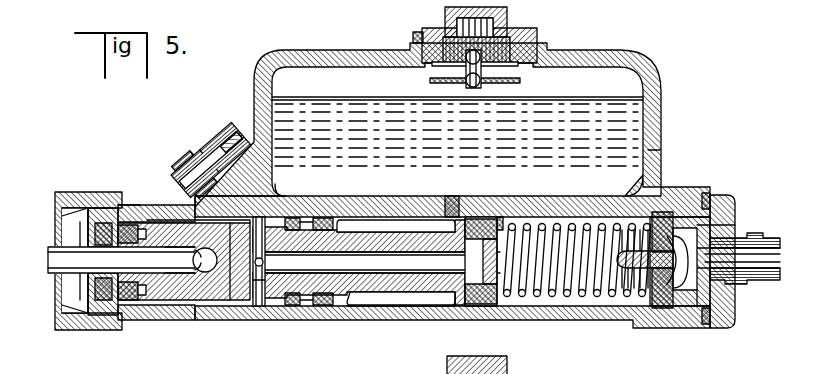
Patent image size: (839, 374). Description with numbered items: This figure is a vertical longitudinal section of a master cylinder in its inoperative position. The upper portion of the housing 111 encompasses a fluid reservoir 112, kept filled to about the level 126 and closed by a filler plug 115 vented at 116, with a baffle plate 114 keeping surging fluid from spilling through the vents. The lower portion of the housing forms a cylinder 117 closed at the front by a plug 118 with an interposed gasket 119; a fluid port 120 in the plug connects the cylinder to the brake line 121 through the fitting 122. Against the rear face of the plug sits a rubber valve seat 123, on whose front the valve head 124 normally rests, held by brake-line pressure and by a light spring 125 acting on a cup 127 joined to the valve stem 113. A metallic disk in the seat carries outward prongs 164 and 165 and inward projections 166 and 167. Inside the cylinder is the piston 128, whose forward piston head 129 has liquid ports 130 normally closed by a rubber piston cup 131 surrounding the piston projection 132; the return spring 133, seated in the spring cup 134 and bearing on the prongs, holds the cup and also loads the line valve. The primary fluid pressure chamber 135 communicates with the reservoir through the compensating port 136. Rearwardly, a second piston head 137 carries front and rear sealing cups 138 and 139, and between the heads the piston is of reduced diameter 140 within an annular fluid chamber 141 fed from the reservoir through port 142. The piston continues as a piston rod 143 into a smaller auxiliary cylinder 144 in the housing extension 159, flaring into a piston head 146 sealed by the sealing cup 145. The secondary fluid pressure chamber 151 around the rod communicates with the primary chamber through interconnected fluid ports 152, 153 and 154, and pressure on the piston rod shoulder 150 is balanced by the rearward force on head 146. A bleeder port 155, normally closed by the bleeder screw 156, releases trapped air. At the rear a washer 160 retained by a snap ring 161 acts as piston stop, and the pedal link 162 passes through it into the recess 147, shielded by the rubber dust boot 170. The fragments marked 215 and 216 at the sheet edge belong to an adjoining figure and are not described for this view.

The housing 111 is at (655, 118).
The fluid reservoir 112 is at (617, 114).
The valve stem 113 is at (655, 175).
The baffle plate 114 is at (518, 81).
The filler plug 115 is at (538, 30).
The vents 116 is at (446, 20).
The cylinder 117 is at (592, 206).
The plug 118 is at (726, 232).
The gasket 119 is at (705, 193).
The fluid port 120 is at (700, 268).
The brake line 121 is at (776, 262).
The fitting 122 is at (763, 238).
The rubber valve seat 123 is at (663, 307).
The valve head 124 is at (700, 296).
The light spring 125 is at (628, 284).
The fluid level 126 is at (328, 101).
The cup 127 is at (623, 280).
The piston 128 is at (455, 299).
The forward piston head 129 is at (460, 308).
The liquid ports 130 is at (452, 307).
The rubber piston cup 131 is at (503, 212).
The piston projection 132 is at (497, 272).
The return spring 133 is at (618, 244).
The spring cup 134 is at (488, 307).
The primary fluid pressure chamber 135 is at (543, 222).
The compensating port 136 is at (512, 214).
The second piston head 137 is at (322, 217).
The front sealing cup 138 is at (334, 217).
The rear sealing cup 139 is at (293, 215).
The reduced diameter portion 140 is at (435, 244).
The annular fluid chamber 141 is at (407, 308).
The port 142 is at (452, 212).
The piston rod 143 is at (228, 283).
The auxiliary cylinder 144 is at (186, 300).
The sealing cup 145 is at (128, 302).
The piston head 146 is at (145, 222).
The recess 147 is at (165, 300).
The piston rod shoulder 150 is at (266, 308).
The secondary fluid pressure chamber 151 is at (231, 284).
The fluid port 152 is at (383, 258).
The fluid port 153 is at (255, 308).
The fluid port 154 is at (264, 262).
The bleeder port 155 is at (276, 189).
The bleeder screw 156 is at (200, 117).
The housing extension 159 is at (138, 204).
The washer 160 is at (97, 288).
The snap ring 161 is at (97, 296).
The pedal link 162 is at (52, 249).
The outward projection 164 is at (667, 190).
The outward projection 165 is at (663, 303).
The inward projection 166 is at (712, 222).
The inward projection 167 is at (668, 294).
The rubber dust boot 170 is at (105, 331).
The element 215 is at (555, 366).
The element 216 is at (440, 370).